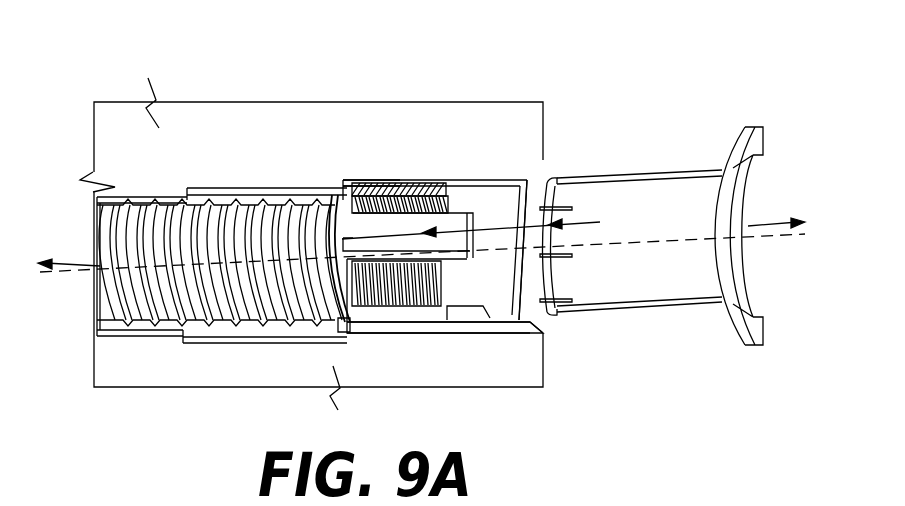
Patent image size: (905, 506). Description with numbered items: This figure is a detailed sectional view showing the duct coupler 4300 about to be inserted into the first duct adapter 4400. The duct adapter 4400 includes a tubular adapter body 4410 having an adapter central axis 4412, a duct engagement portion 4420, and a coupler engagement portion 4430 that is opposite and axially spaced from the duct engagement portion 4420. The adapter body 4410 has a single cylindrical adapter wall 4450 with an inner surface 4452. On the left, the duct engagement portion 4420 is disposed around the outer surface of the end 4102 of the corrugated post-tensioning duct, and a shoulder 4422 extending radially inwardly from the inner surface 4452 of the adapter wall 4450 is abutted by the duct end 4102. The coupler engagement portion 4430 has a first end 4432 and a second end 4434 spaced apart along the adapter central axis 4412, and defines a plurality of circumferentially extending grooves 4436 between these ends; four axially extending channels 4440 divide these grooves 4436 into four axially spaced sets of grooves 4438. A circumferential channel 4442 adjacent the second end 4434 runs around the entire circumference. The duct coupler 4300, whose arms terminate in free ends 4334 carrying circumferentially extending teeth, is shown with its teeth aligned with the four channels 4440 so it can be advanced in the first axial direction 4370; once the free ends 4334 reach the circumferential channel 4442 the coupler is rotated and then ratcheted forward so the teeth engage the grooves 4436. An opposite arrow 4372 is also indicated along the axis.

The end of the corrugated post-tensioning duct 4102 is at (343, 327).
The duct coupler 4300 is at (678, 163).
The free end 4334 is at (577, 172).
The first axial direction 4370 is at (776, 207).
The flow direction arrow 4372 is at (69, 246).
The first duct adapter 4400 is at (493, 200).
The tubular adapter body 4410 is at (376, 162).
The adapter central axis 4412 is at (783, 236).
The duct engagement portion 4420 is at (250, 147).
The shoulder 4422 is at (340, 195).
The coupler engagement portion 4430 is at (485, 333).
The first end 4432 is at (529, 326).
The second end 4434 is at (352, 355).
The circumferentially extending grooves 4436 is at (407, 182).
The axially spaced sets of grooves 4438 is at (467, 203).
The axially extending channels 4440 is at (501, 165).
The circumferential channel 4442 is at (344, 217).
The adapter wall 4450 is at (448, 193).
The inner surface 4452 is at (523, 178).